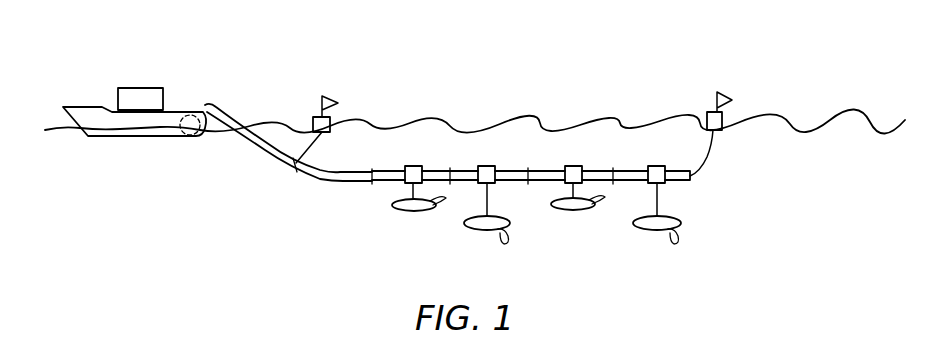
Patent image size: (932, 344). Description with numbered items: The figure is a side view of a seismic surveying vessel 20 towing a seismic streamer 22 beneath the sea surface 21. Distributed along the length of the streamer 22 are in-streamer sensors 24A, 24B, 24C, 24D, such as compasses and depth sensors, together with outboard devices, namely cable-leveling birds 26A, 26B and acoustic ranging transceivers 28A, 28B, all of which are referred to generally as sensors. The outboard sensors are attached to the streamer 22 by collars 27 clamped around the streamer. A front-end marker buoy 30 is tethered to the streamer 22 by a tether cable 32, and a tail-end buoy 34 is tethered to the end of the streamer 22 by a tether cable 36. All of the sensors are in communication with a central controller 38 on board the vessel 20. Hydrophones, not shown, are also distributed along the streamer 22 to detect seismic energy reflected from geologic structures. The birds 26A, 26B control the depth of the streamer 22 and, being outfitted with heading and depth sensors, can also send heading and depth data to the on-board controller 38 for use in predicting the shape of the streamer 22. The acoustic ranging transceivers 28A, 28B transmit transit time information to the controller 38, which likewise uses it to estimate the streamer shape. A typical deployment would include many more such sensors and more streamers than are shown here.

The seismic surveying vessel 20 is at (148, 87).
The sea surface 21 is at (843, 118).
The seismic streamer 22 is at (337, 183).
The in-streamer sensor 24A is at (376, 186).
The in-streamer sensor 24B is at (452, 168).
The in-streamer sensor 24C is at (532, 168).
The in-streamer sensor 24D is at (613, 165).
The cable-leveling bird 26A is at (415, 211).
The cable-leveling bird 26B is at (568, 208).
The collar 27 is at (419, 167).
The acoustic ranging transceiver 28A is at (487, 232).
The acoustic ranging transceiver 28B is at (652, 230).
The front-end marker buoy 30 is at (340, 110).
The tether cable 32 is at (327, 133).
The tail-end buoy 34 is at (727, 113).
The tether cable 36 is at (707, 157).
The central controller 38 is at (185, 138).